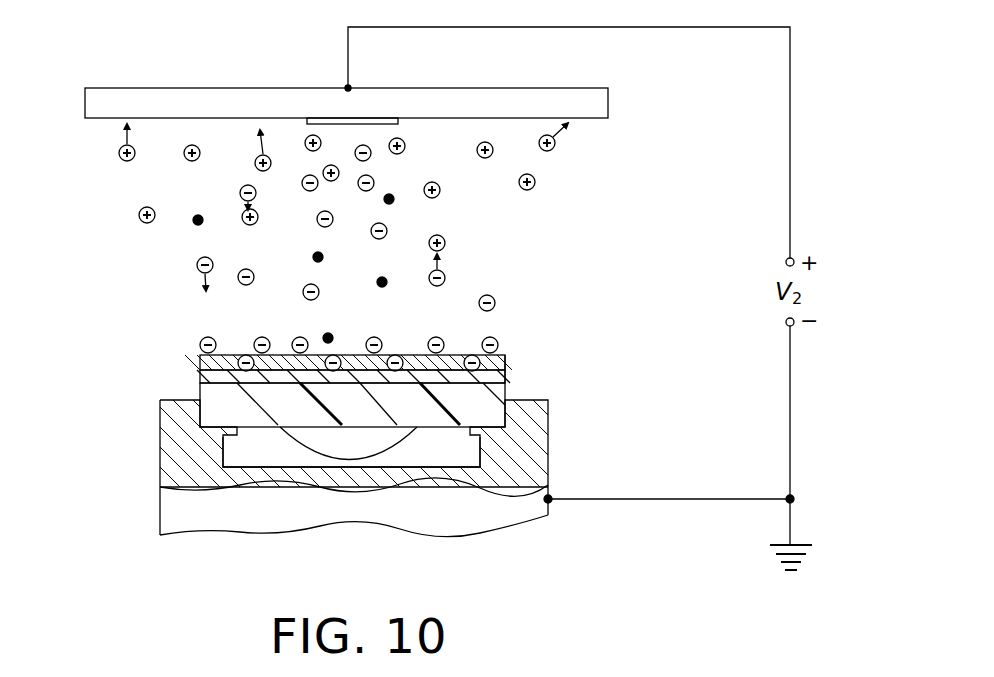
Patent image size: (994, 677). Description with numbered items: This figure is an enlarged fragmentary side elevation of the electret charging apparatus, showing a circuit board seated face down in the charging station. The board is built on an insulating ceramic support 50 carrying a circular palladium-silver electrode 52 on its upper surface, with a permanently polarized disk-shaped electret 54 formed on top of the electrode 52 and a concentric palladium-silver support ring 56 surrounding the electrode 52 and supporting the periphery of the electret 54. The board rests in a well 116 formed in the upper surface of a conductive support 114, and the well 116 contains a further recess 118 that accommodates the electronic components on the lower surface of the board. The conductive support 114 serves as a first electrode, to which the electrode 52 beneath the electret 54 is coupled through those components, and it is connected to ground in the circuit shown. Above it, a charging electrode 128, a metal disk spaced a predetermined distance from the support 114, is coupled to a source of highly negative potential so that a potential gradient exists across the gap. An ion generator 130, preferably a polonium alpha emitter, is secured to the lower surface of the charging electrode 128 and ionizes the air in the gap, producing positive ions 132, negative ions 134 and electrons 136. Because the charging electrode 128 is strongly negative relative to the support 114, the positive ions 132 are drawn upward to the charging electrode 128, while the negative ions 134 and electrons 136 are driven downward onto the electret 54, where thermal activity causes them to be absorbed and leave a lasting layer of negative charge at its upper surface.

The charging electrode 128 is at (256, 70).
The ion generator 130 is at (370, 124).
The positive ions 132 is at (548, 152).
The negative ions 134 is at (494, 336).
The electrons 136 is at (390, 201).
The electret 54 is at (200, 358).
The electrode 52 is at (352, 378).
The insulating ceramic support 50 is at (457, 425).
The support ring 56 is at (500, 376).
The well 116 is at (504, 420).
The recess 118 is at (226, 452).
The conductive support 114 is at (166, 507).